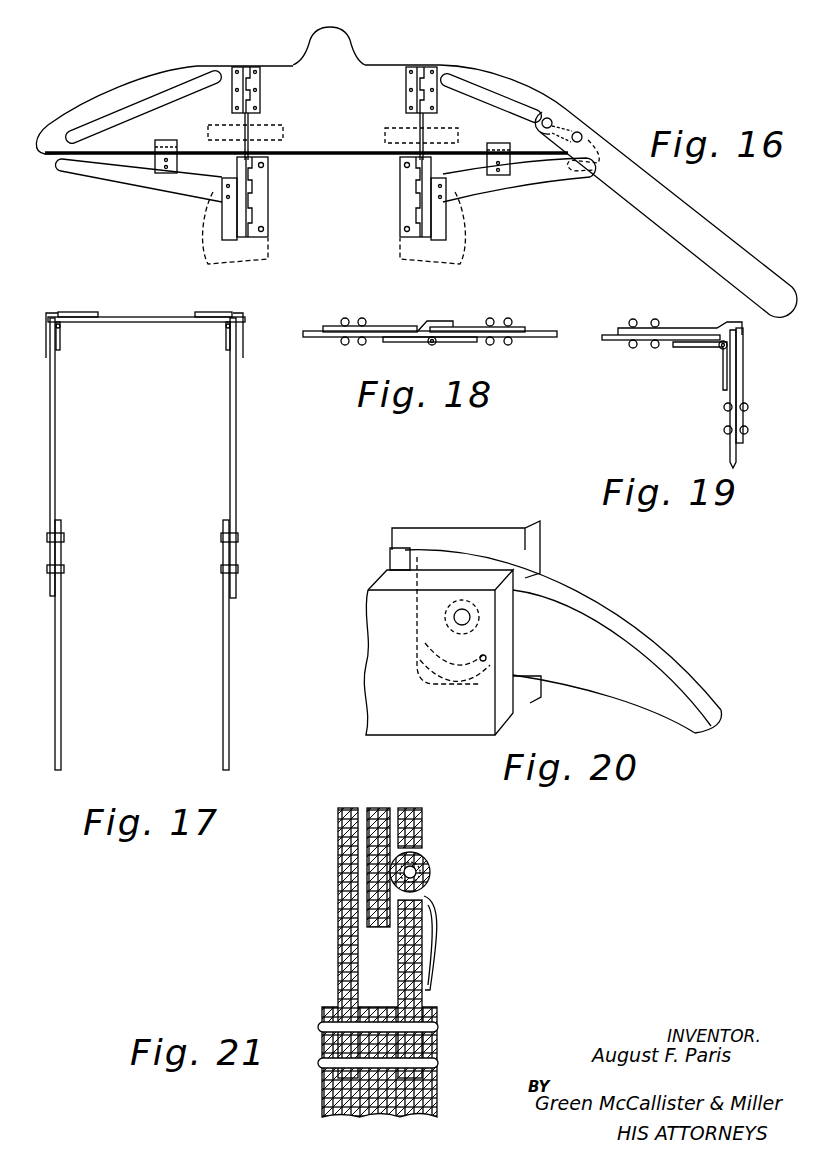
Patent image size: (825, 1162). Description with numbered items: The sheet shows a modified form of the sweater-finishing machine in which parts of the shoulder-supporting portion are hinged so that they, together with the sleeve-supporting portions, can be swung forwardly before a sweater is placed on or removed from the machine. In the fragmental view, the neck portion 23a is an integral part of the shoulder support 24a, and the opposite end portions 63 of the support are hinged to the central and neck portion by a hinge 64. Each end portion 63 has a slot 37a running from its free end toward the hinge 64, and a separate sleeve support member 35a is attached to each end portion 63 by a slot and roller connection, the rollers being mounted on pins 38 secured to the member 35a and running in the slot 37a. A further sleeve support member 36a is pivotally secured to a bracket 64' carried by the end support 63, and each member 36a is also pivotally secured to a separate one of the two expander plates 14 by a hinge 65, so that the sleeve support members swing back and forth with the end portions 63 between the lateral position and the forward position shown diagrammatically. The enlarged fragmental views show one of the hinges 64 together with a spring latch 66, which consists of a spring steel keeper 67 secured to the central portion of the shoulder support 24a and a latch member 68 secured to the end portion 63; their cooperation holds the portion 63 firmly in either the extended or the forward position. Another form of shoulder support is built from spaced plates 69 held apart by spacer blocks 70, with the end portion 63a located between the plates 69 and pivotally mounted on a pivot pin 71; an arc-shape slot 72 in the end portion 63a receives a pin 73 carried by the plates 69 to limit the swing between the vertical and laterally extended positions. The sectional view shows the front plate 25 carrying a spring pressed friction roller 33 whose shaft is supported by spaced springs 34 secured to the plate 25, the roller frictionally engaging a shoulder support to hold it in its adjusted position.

In FIG. 16, the expander plate 14 is at (200, 243).
In FIG. 16, the neck portion 23a is at (333, 27).
In FIG. 16, the shoulder support 24a is at (378, 78).
In FIG. 17, the shoulder support 24a is at (150, 317).
In FIG. 18, the shoulder support 24a is at (315, 337).
In FIG. 19, the shoulder support 24a is at (612, 339).
In FIG. 21, the shoulder support 24a is at (382, 810).
In FIG. 21, the front plate 25 is at (338, 835).
In FIG. 21, the friction roller 33 is at (437, 871).
In FIG. 21, the spring 34 is at (440, 917).
In FIG. 16, the sleeve support member 35a is at (700, 212).
In FIG. 17, the sleeve support member 35a is at (62, 700).
In FIG. 16, the sleeve support member 36a is at (145, 177).
In FIG. 16, the slot 37a is at (171, 92).
In FIG. 16, the pin 38 is at (580, 130).
In FIG. 17, the pin 38 is at (47, 570).
In FIG. 16, the end portion 63 is at (105, 95).
In FIG. 17, the end portion 63 is at (57, 403).
In FIG. 18, the end portion 63 is at (540, 338).
In FIG. 19, the end portion 63 is at (739, 453).
In FIG. 20, the end portion 63a is at (612, 620).
In FIG. 16, the hinge 64 is at (333, 96).
In FIG. 17, the hinge 64 is at (143, 344).
In FIG. 18, the hinge 64 is at (430, 355).
In FIG. 19, the hinge 64 is at (700, 365).
In FIG. 16, the bracket 64' is at (329, 144).
In FIG. 16, the hinge 65 is at (263, 167).
In FIG. 17, the spring latch 66 is at (220, 317).
In FIG. 18, the keeper 67 is at (443, 322).
In FIG. 19, the keeper 67 is at (727, 322).
In FIG. 18, the latch member 68 is at (465, 330).
In FIG. 19, the latch member 68 is at (742, 367).
In FIG. 20, the plate 69 is at (472, 535).
In FIG. 20, the spacer block 70 is at (392, 559).
In FIG. 20, the pivot pin 71 is at (454, 610).
In FIG. 20, the arc-shape slot 72 is at (420, 665).
In FIG. 20, the pin 73 is at (481, 664).